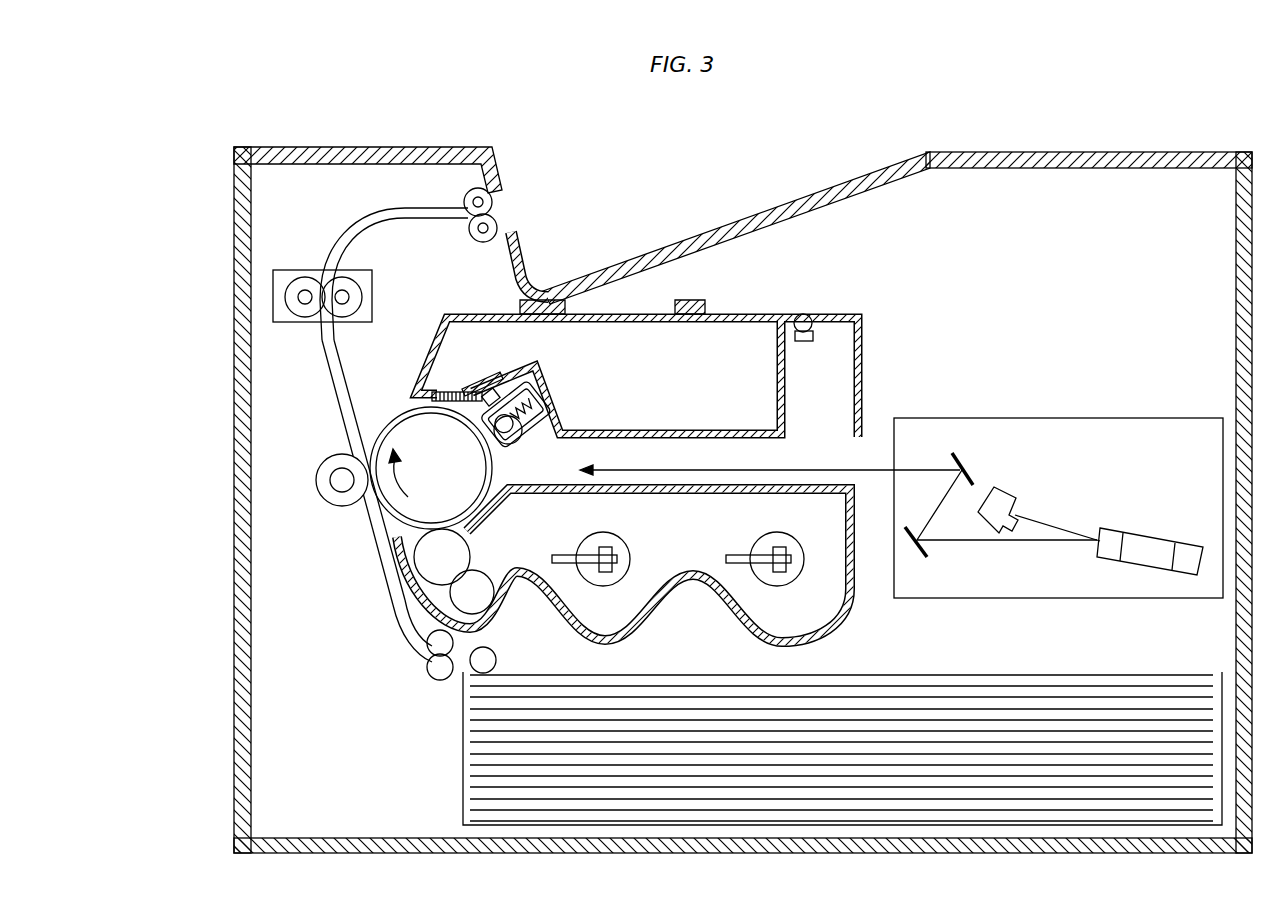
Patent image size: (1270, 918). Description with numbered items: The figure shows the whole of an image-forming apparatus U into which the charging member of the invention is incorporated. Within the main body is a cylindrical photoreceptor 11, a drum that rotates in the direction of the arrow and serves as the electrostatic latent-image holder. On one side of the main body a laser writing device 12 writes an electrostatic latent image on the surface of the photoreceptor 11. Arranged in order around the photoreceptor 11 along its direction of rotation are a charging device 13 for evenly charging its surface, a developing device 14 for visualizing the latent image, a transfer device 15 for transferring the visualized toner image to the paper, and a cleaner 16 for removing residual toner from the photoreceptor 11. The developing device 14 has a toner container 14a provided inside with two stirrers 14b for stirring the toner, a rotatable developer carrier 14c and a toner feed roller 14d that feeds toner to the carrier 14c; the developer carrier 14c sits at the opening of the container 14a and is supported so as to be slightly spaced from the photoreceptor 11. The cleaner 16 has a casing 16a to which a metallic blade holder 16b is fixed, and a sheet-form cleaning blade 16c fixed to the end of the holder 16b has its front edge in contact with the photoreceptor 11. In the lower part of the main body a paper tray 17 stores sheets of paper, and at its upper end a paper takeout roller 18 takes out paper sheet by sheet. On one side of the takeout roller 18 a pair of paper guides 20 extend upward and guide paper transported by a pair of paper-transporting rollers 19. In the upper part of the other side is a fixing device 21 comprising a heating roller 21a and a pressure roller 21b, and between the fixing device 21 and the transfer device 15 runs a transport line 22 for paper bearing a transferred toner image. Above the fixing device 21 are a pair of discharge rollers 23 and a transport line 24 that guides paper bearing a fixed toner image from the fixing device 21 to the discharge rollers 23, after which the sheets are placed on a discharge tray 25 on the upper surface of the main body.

The image-forming apparatus U is at (1012, 137).
The photoreceptor 11 is at (452, 510).
The laser writing device 12 is at (1056, 418).
The charging device 13 is at (524, 445).
The developing device 14 is at (816, 636).
The toner container 14a is at (676, 605).
The stirrers 14b is at (566, 550).
The developer carrier 14c is at (462, 569).
The toner feed roller 14d is at (482, 574).
The transfer device 15 is at (314, 481).
The cleaner 16 is at (757, 310).
The casing 16a is at (463, 312).
The blade holder 16b is at (548, 376).
The cleaning blade 16c is at (452, 392).
The paper tray 17 is at (442, 776).
The paper takeout roller 18 is at (497, 660).
The paper-transporting rollers 19 is at (437, 685).
The paper guides 20 is at (390, 595).
The fixing device 21 is at (166, 246).
The heating roller 21a is at (338, 276).
The pressure roller 21b is at (285, 296).
The transport line 22 is at (332, 383).
The discharge rollers 23 is at (514, 210).
The transport line 24 is at (358, 210).
The discharge tray 25 is at (790, 196).